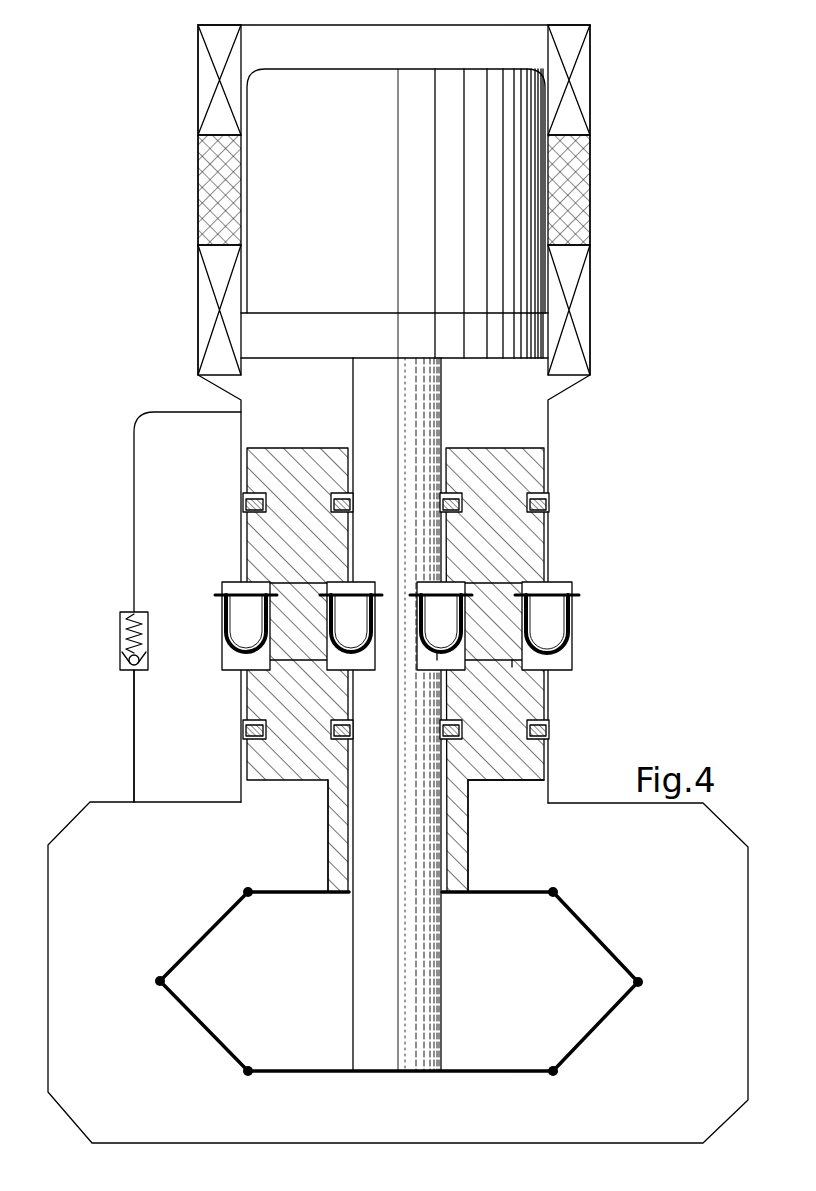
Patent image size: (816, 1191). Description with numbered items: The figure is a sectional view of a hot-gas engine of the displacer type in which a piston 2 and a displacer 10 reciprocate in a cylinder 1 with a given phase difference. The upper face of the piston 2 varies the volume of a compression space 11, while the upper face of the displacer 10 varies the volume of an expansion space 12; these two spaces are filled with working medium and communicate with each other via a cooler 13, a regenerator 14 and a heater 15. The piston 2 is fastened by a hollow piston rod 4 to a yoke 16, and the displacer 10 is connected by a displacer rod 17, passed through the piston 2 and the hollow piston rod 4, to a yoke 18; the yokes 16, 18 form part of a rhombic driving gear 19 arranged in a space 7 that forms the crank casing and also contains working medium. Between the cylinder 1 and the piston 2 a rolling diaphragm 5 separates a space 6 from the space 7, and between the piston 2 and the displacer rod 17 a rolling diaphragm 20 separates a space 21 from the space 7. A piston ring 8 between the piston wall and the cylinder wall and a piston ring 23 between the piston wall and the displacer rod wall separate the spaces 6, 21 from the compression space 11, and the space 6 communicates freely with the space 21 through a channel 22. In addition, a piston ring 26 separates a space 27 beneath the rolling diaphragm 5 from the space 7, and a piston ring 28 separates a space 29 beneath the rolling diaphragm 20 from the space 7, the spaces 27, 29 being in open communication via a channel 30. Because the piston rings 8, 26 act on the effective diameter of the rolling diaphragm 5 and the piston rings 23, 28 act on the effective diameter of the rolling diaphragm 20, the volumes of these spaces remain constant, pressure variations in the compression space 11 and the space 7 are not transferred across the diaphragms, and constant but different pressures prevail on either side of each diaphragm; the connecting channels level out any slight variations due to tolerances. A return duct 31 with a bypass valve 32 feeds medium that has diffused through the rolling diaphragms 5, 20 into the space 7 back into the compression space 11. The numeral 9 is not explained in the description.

The cylinder 1 is at (550, 410).
The piston 2 is at (543, 451).
The hollow piston rod 4 is at (466, 846).
The rolling diaphragm 5 is at (417, 614).
The space 6 is at (562, 620).
The space (crank casing) 7 is at (658, 875).
The piston ring 8 is at (243, 501).
The block lower portion 9 is at (516, 784).
The displacer 10 is at (378, 215).
The compression space 11 is at (497, 415).
The expansion space 12 is at (426, 63).
The cooler 13 is at (580, 302).
The regenerator 14 is at (572, 186).
The heater 15 is at (575, 85).
The yoke 16 is at (507, 895).
The displacer rod 17 is at (425, 993).
The yoke 18 is at (480, 1070).
The rhombic driving gear 19 is at (436, 981).
The rolling diaphragm 20 is at (530, 687).
The space 21 is at (447, 635).
The channel 22 is at (290, 583).
The piston ring 23 is at (342, 494).
The piston ring 26 is at (243, 729).
The space 27 is at (236, 660).
The piston ring 28 is at (458, 740).
The space 29 is at (450, 682).
The channel 30 is at (567, 670).
The return duct 31 is at (134, 697).
The bypass valve 32 is at (118, 632).